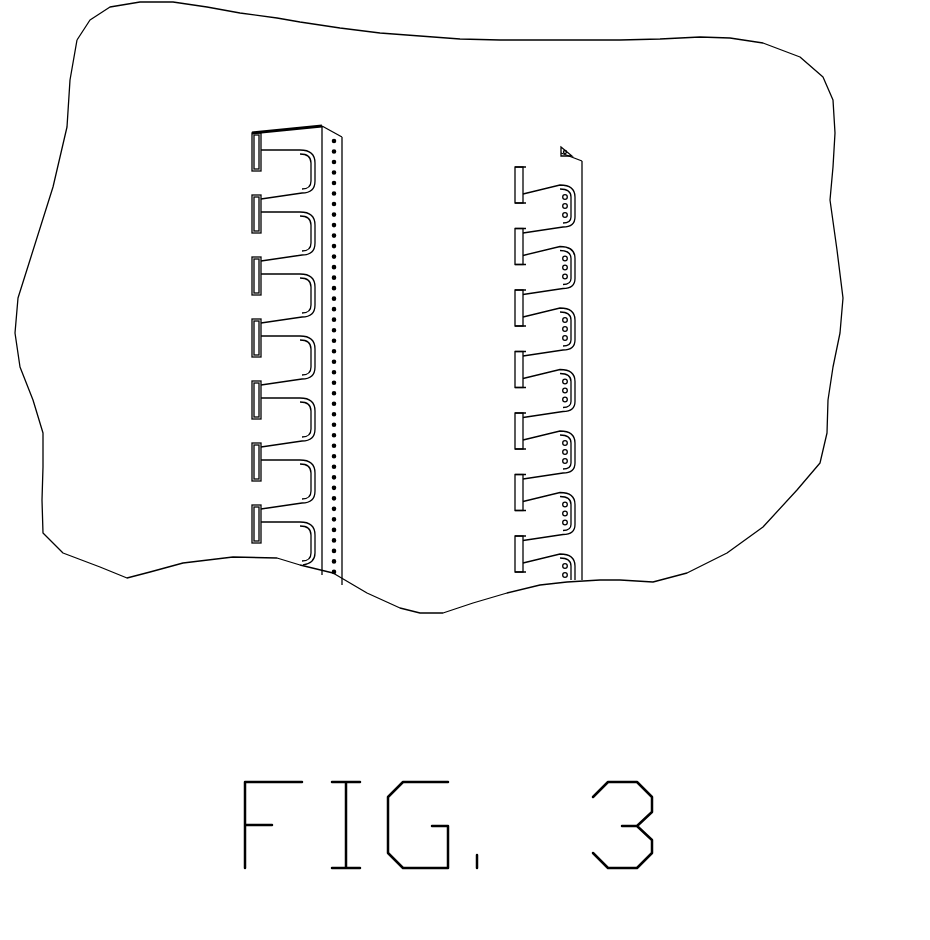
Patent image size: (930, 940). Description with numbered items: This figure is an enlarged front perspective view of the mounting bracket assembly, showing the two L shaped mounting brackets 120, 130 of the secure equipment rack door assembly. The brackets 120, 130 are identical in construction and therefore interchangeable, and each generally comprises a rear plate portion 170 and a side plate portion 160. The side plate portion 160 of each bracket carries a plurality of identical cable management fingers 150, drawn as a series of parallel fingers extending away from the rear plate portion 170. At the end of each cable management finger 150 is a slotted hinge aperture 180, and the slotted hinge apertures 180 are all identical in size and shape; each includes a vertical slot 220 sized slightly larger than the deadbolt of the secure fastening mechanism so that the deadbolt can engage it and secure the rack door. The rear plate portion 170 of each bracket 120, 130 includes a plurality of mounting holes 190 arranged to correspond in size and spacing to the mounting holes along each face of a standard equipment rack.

The L shaped mounting bracket 120 is at (315, 112).
The L shaped mounting bracket 130 is at (590, 124).
The cable management finger 150 is at (278, 272).
The side plate portion 160 is at (320, 200).
The rear plate portion 170 is at (325, 138).
The slotted hinge aperture 180 is at (252, 385).
The mounting holes 190 is at (335, 190).
The vertical slot 220 is at (255, 462).